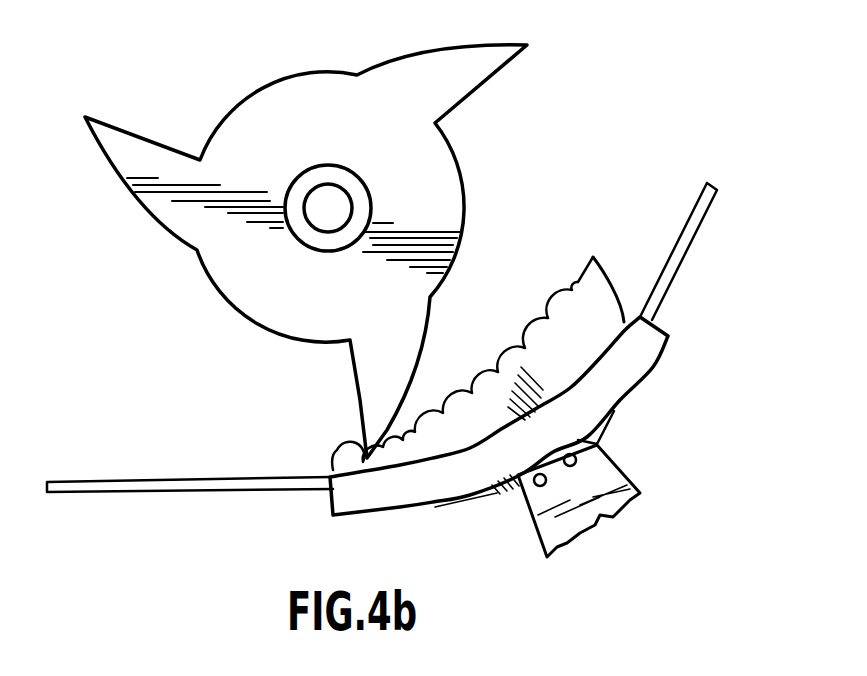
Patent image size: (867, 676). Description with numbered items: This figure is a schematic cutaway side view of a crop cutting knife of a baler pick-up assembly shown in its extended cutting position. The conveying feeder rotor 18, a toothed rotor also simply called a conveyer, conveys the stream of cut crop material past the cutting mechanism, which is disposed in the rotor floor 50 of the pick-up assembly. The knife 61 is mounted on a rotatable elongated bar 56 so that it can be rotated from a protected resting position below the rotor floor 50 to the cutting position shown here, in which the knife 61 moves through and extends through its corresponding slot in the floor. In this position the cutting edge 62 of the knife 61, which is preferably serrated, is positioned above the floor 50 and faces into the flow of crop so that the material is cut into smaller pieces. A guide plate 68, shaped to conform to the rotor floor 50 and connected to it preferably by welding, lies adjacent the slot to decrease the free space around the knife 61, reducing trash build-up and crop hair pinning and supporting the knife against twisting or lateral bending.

The conveying feeder rotor 18 is at (257, 324).
The rotor floor 50 is at (232, 495).
The guide plate 68 is at (652, 370).
The knife 61 is at (601, 287).
The cutting edge 62 is at (457, 377).
The rotatable elongated bar 56 is at (545, 528).